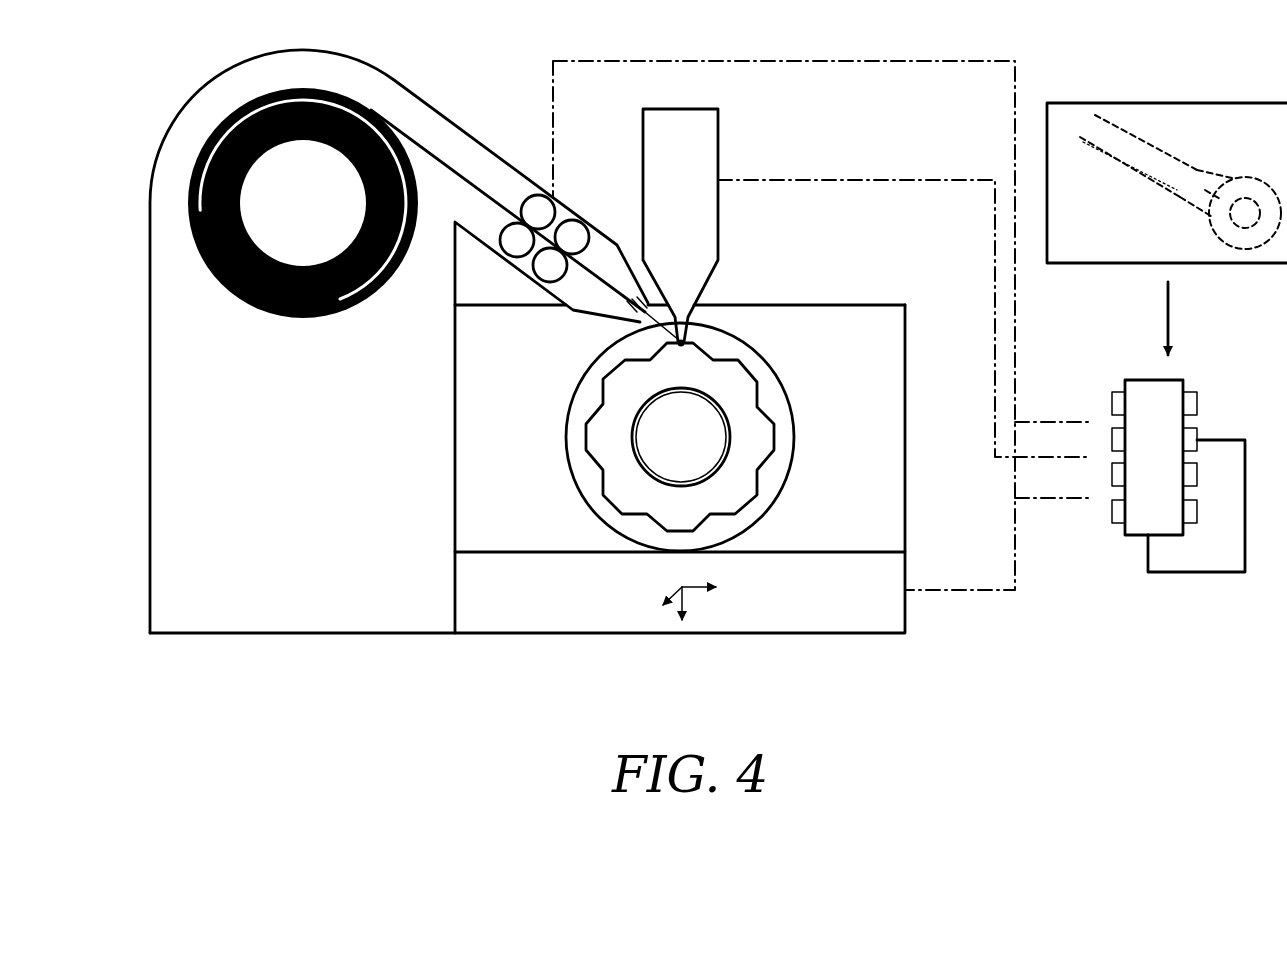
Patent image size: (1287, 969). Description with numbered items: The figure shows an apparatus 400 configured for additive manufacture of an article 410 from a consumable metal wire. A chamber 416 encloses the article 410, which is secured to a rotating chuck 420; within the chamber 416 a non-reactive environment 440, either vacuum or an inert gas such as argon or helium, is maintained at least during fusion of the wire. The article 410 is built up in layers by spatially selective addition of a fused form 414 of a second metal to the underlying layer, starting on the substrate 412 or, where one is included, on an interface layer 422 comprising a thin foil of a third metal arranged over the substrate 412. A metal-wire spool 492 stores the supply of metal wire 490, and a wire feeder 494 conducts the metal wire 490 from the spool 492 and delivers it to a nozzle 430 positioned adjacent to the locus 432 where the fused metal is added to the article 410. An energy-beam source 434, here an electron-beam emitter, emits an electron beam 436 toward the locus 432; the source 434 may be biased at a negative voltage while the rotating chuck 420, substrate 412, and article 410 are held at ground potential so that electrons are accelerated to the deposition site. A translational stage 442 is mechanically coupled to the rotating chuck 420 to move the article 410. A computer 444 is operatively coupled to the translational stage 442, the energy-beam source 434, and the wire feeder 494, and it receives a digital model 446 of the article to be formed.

The apparatus 400 is at (113, 80).
The article 410 is at (775, 393).
The substrate 412 is at (698, 450).
The fused form 414 is at (607, 400).
The chamber 416 is at (905, 497).
The rotating chuck 420 is at (797, 420).
The interface layer 422 is at (728, 437).
The nozzle 430 is at (623, 322).
The locus 432 is at (680, 345).
The energy-beam source 434 is at (700, 196).
The electron beam 436 is at (698, 333).
The non-reactive environment 440 is at (480, 352).
The translational stage 442 is at (880, 610).
The computer 444 is at (1117, 560).
The digital model 446 is at (1098, 246).
The metal wire 490 is at (597, 280).
The metal-wire spool 492 is at (320, 217).
The wire feeder 494 is at (512, 207).